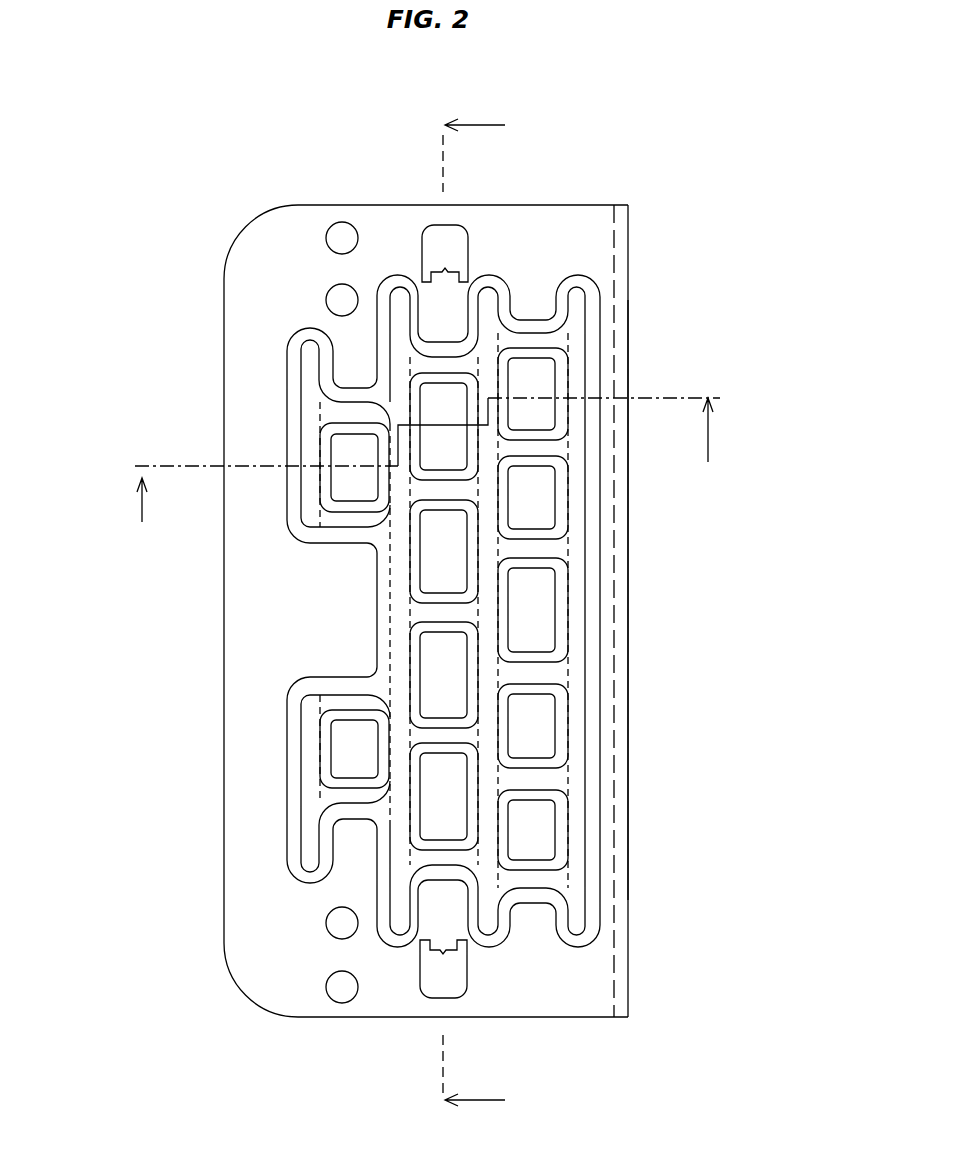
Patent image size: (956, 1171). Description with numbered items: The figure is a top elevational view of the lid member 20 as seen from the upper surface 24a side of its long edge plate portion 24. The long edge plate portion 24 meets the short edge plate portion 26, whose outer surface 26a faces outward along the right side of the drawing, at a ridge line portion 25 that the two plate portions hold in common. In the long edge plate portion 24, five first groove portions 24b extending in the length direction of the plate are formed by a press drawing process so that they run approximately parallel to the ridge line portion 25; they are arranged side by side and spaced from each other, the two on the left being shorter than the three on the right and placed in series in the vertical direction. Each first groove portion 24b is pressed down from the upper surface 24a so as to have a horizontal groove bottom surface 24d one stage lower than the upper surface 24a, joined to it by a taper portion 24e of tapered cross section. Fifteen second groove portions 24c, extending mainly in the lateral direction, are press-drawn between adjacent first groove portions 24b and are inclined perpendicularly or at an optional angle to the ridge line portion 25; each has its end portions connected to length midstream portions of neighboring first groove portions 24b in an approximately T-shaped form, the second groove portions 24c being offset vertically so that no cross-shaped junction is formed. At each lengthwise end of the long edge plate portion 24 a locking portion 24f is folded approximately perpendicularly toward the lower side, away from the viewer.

The lid member 20 is at (361, 151).
The long edge plate portion 24 is at (402, 643).
The upper surface 24a is at (253, 392).
The first groove portion 24b is at (575, 611).
The second groove portion 24c is at (355, 700).
The groove bottom surface 24d is at (307, 803).
The taper portion 24e is at (636, 821).
The locking portion 24f is at (443, 953).
The ridge line portion 25 is at (628, 1012).
The short edge plate portion 26 is at (710, 611).
The outer surface 26a is at (717, 600).